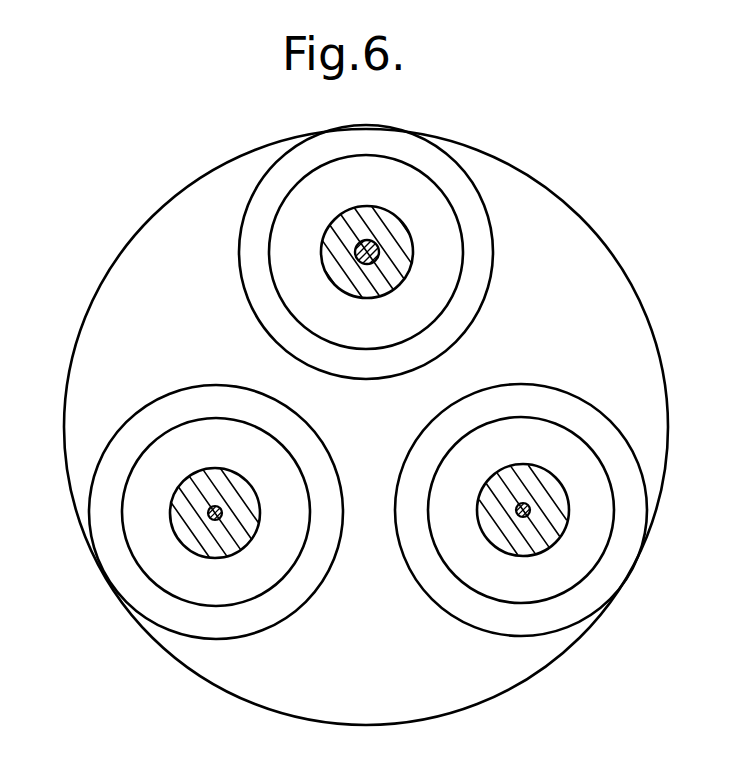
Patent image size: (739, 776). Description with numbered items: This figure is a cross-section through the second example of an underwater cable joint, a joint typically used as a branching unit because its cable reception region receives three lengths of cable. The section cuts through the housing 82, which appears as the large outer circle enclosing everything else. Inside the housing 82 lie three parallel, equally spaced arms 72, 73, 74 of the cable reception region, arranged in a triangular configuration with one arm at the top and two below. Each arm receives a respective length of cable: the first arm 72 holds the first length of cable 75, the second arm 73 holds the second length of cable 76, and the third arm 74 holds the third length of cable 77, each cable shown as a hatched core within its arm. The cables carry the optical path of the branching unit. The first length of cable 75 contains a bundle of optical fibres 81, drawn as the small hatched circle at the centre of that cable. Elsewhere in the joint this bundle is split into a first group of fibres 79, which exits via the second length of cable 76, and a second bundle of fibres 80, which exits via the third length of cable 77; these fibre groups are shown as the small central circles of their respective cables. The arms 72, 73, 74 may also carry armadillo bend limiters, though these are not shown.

The housing 82 is at (112, 264).
The arm 72 is at (278, 213).
The arm 73 is at (478, 597).
The arm 74 is at (137, 567).
The first length of cable 75 is at (315, 255).
The second length of cable 76 is at (528, 477).
The third length of cable 77 is at (248, 547).
The first group of fibres 79 is at (532, 507).
The second bundle of fibres 80 is at (206, 506).
The bundle of optical fibres 81 is at (380, 253).